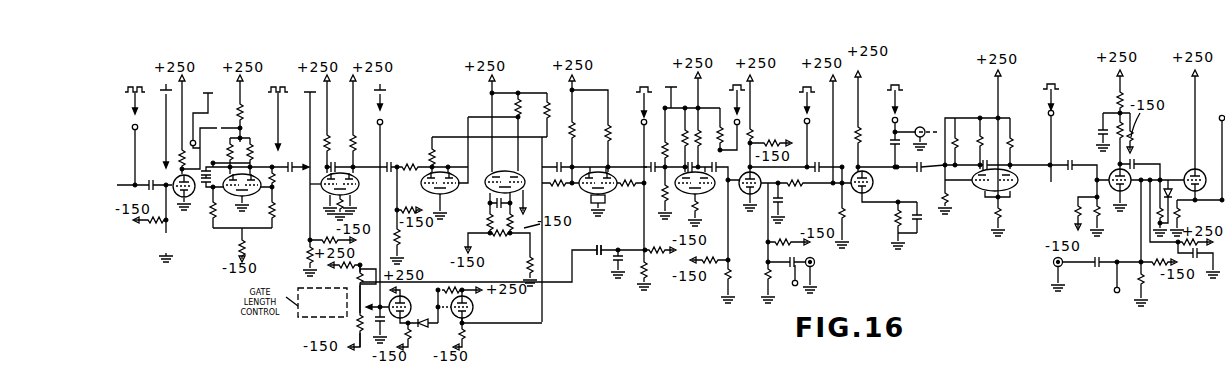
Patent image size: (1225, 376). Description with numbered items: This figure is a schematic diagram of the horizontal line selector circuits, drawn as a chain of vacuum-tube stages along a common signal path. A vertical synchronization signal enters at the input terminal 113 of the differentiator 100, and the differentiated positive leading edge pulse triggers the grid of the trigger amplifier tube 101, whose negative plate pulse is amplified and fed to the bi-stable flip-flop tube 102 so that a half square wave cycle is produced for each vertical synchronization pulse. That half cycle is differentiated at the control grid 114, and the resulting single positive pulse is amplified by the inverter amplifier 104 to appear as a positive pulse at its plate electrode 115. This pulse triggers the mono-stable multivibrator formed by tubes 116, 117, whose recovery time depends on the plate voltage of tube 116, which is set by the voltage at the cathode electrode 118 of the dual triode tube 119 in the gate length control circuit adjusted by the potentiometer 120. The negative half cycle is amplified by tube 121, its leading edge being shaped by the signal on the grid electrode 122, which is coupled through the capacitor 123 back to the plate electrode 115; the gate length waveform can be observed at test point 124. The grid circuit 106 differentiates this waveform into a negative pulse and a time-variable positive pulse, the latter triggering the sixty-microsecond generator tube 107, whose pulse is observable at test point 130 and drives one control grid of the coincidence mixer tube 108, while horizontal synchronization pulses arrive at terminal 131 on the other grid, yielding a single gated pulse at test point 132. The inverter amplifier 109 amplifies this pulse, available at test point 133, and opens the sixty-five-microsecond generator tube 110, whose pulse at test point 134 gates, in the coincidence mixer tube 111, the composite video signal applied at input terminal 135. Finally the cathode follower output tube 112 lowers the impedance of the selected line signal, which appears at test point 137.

The differentiator 100 is at (150, 179).
The trigger amplifier tube 101 is at (194, 193).
The bi-stable flip-flop tube 102 is at (247, 175).
The inverter amplifier 104 is at (355, 167).
The differentiator grid circuit 106 is at (672, 170).
The 60-microsecond generator tube 107 is at (712, 193).
The coincidence mixer tube 108 is at (746, 172).
The inverter amplifier 109 is at (871, 186).
The 65-microsecond generator tube 110 is at (1017, 182).
The coincidence mixer tube 111 is at (1116, 170).
The cathode follower output tube 112 is at (1192, 171).
The input terminal 113 is at (131, 124).
The control grid 114 is at (308, 197).
The plate electrode 115 is at (372, 159).
The mono-stable multivibrator tube 116 is at (438, 172).
The mono-stable multivibrator tube 117 is at (503, 171).
The cathode electrode 118 is at (468, 324).
The gate length control tube 119 is at (473, 308).
The potentiometer 120 is at (358, 312).
The amplifier tube 121 is at (592, 171).
The grid electrode 122 is at (606, 199).
The capacitor 123 is at (600, 245).
The test point 124 is at (612, 133).
The test point 130 is at (735, 114).
The terminal 131 is at (815, 267).
The test point 132 is at (803, 120).
The test point 133 is at (899, 118).
The test point 134 is at (1054, 116).
The input terminal 135 is at (1053, 266).
The test point 137 is at (1219, 117).